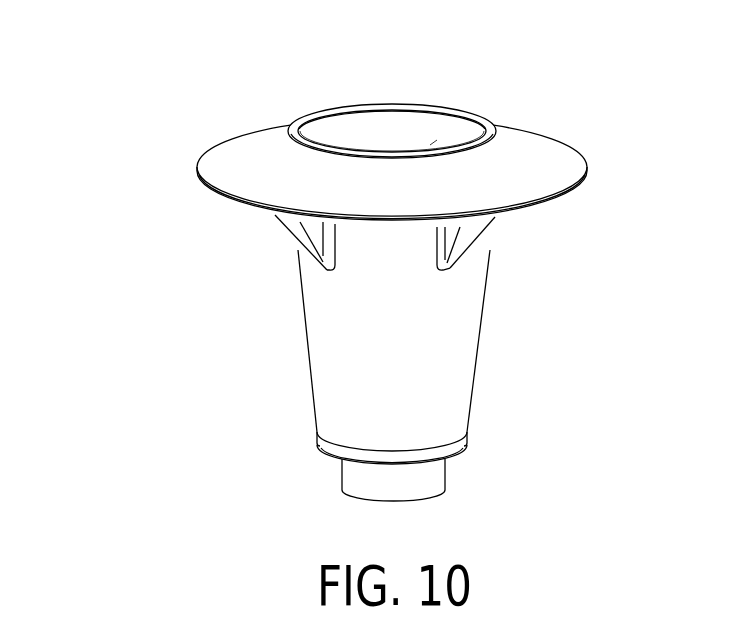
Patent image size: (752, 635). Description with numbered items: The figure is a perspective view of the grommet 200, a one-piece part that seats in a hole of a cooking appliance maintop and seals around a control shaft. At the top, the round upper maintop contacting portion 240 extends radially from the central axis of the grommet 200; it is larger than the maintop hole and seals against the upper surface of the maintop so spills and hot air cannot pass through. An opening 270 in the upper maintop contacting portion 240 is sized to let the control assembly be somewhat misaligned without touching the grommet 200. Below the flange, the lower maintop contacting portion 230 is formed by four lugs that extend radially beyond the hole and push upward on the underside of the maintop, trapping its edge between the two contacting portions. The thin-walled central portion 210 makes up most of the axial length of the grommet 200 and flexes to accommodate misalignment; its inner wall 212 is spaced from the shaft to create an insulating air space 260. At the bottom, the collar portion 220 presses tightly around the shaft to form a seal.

The grommet 200 is at (167, 178).
The central portion 210 is at (432, 345).
The inner wall 212 is at (343, 137).
The collar portion 220 is at (423, 482).
The lower maintop contacting portion 230 is at (303, 248).
The upper maintop contacting portion 240 is at (513, 163).
The air space 260 is at (437, 134).
The opening 270 is at (335, 110).